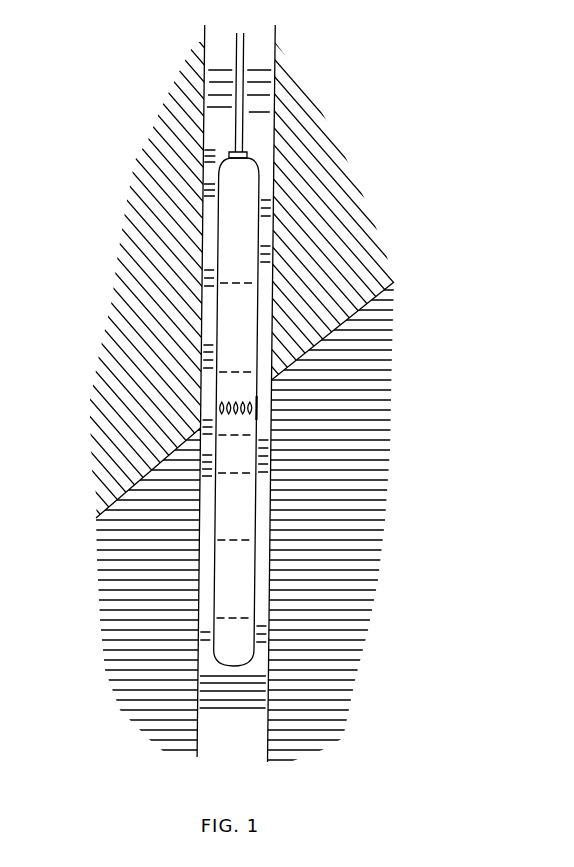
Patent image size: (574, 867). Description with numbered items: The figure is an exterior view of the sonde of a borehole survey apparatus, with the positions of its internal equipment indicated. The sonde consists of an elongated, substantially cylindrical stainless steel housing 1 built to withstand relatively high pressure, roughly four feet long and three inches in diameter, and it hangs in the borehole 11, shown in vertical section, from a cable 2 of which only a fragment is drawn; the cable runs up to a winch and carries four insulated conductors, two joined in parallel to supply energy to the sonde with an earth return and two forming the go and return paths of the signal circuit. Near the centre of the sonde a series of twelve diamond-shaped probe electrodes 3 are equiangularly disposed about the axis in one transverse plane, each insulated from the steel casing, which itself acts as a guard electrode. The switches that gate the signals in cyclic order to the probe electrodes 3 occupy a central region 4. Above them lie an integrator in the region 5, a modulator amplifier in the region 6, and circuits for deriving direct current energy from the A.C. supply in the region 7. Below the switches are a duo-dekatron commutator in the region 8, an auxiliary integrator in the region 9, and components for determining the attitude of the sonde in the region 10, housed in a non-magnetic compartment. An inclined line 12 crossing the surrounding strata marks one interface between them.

The housing 1 is at (252, 592).
The cable 2 is at (240, 90).
The probe electrodes 3 is at (265, 404).
The central region 4 is at (223, 422).
The integrator region 5 is at (228, 325).
The modulator amplifier region 6 is at (230, 245).
The direct current supply region 7 is at (228, 182).
The duo-dekatron commutator region 8 is at (223, 455).
The auxiliary integrator region 9 is at (239, 512).
The attitude components region 10 is at (225, 582).
The borehole 11 is at (236, 393).
The inclined line 12 is at (391, 283).